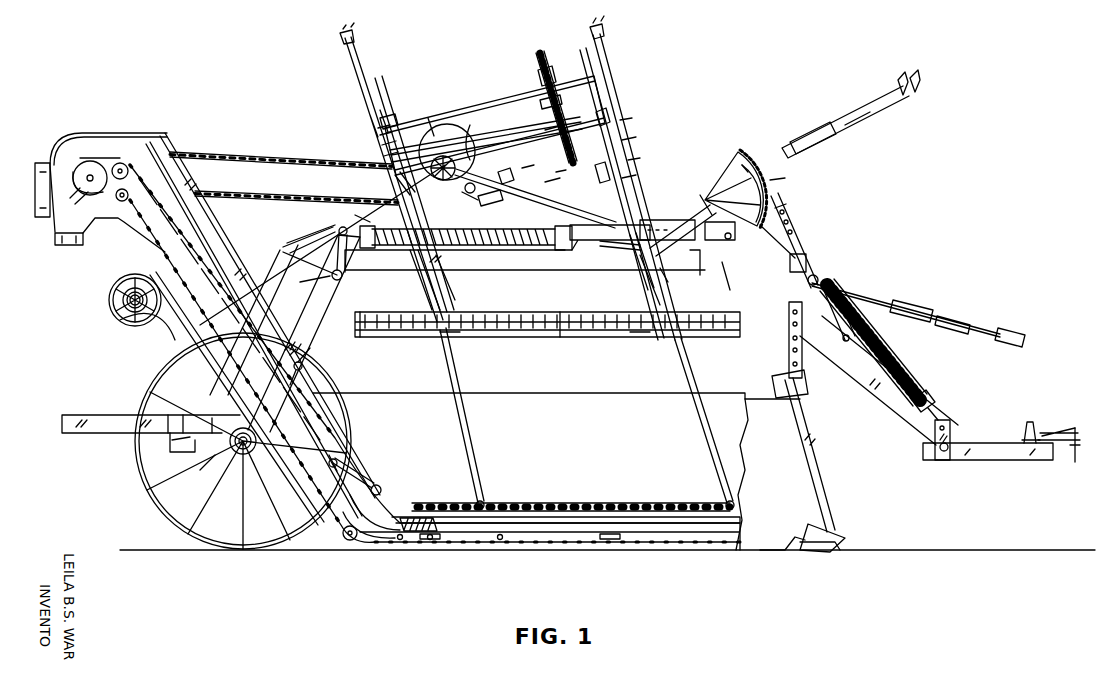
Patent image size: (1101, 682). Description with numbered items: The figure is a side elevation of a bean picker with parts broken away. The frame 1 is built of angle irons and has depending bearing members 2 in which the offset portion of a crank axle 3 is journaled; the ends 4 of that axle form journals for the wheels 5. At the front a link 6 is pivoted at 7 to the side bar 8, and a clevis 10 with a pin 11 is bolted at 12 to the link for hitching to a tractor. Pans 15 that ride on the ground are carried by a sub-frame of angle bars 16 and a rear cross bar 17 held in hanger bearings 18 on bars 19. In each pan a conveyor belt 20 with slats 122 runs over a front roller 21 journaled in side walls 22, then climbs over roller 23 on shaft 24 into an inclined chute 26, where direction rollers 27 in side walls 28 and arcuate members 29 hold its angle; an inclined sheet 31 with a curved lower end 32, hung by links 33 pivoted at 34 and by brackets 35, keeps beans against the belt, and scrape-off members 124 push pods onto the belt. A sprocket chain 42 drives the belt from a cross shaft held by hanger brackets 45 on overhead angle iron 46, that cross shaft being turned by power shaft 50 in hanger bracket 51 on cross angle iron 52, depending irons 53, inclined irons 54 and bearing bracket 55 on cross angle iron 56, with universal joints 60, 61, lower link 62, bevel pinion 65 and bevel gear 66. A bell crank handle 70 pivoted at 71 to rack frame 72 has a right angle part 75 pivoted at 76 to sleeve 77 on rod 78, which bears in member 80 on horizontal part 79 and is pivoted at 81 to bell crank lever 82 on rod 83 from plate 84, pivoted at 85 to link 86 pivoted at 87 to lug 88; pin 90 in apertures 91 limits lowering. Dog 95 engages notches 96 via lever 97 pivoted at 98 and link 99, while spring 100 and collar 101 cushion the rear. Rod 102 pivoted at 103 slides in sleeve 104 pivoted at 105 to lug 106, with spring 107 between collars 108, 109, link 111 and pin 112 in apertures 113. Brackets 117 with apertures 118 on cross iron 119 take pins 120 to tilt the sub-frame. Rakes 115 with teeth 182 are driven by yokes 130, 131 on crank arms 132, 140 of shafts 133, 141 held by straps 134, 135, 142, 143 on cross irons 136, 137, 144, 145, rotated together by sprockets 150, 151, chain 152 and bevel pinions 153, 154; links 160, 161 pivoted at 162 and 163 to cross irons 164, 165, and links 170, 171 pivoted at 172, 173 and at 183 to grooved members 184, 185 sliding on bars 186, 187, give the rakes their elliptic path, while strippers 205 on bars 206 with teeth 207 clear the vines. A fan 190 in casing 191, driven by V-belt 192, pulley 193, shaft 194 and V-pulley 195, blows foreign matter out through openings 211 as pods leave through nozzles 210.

The frame 1 is at (66, 416).
The bearing members 2 is at (173, 418).
The crank axle 3 is at (178, 455).
The ends of crank axle 4 is at (240, 456).
The wheels 5 is at (137, 470).
The link 6 is at (988, 460).
The pivot 7 is at (936, 451).
The side bar 8 is at (896, 428).
The clevis 10 is at (1074, 428).
The pin 11 is at (1073, 450).
The bolts 12 is at (1030, 421).
The pans 15 is at (440, 546).
The angle bars 16 is at (810, 468).
The rear cross bar 17 is at (303, 364).
The hanger bearings 18 is at (294, 372).
The bars 19 is at (300, 331).
The conveyor belt 20 is at (62, 152).
The roller 21 is at (836, 551).
The side walls 22 is at (846, 530).
The roller 23 is at (84, 192).
The shaft 24 is at (89, 176).
The chute 26 is at (167, 134).
The direction rollers 27 is at (120, 163).
The side walls 28 is at (175, 162).
The arcuate members 29 is at (385, 520).
The inclined flat sheet 31 is at (216, 258).
The curved lower end 32 is at (378, 505).
The links 33 is at (350, 470).
The pivots 34 is at (379, 485).
The brackets 35 is at (334, 458).
The sprocket chain 42 is at (278, 154).
The hanger brackets 45 is at (430, 118).
The overhead cross angle iron 46 is at (432, 156).
The power shaft 50 is at (600, 216).
The hanger bracket 51 is at (495, 201).
The cross angle iron 52 is at (510, 176).
The depending angle irons 53 is at (512, 130).
The angle irons 54 is at (475, 148).
The bearing bracket 55 is at (694, 256).
The cross angle iron 56 is at (725, 276).
The universal joint 60 is at (790, 262).
The universal joint 61 is at (990, 330).
The lower link 62 is at (1000, 343).
The bevel pinion 65 is at (472, 194).
The bevel gear 66 is at (476, 209).
The bell crank lever handle 70 is at (848, 118).
The pivot 71 is at (715, 195).
The rack frame 72 is at (740, 154).
The lower right angle part 75 is at (712, 208).
The pivot 76 is at (764, 230).
The sleeve 77 is at (718, 226).
The rod 78 is at (575, 250).
The horizontal part 79 is at (530, 257).
The upstanding member 80 is at (575, 218).
The pivot 81 is at (339, 227).
The bell crank lever 82 is at (310, 255).
The rod 83 is at (342, 279).
The plate 84 is at (333, 280).
The pivot 85 is at (279, 250).
The link 86 is at (265, 312).
The pivot 87 is at (216, 425).
The upstanding lug 88 is at (222, 468).
The adjustable pin 90 is at (668, 220).
The apertures 91 is at (625, 245).
The sliding dog 95 is at (790, 150).
The notches 96 is at (783, 180).
The handle lever 97 is at (917, 88).
The pivot 98 is at (896, 90).
The link 99 is at (875, 126).
The coiled spring 100 is at (508, 228).
The adjustable collar 101 is at (356, 218).
The rod 102 is at (786, 210).
The pivot 103 is at (740, 170).
The sleeve 104 is at (812, 256).
The pivot 105 is at (952, 424).
The upstanding lug 106 is at (953, 436).
The coiled spring 107 is at (901, 368).
The adjustable collar 108 is at (935, 400).
The collar 109 is at (820, 276).
The link 111 is at (802, 320).
The adjustable pin 112 is at (793, 234).
The apertures 113 is at (790, 222).
The rakes 115 is at (530, 506).
The upstanding brackets 117 is at (791, 364).
The apertures 118 is at (791, 346).
The cross angle iron 119 is at (802, 378).
The adjustable pins 120 is at (791, 326).
The slats 122 is at (548, 541).
The scrape-off members 124 is at (424, 517).
The forward yoke 130 is at (607, 68).
The rear yoke 131 is at (356, 50).
The crank arm 132 is at (593, 80).
The shaft 133 is at (556, 165).
The hanger strap 134 is at (602, 170).
The hanger strap 135 is at (400, 192).
The cross angle iron 136 is at (604, 114).
The cross angle iron 137 is at (385, 174).
The crank arm 140 is at (385, 93).
The shaft 141 is at (468, 96).
The bearing strap 142 is at (545, 75).
The bearing strap 143 is at (396, 114).
The cross angle iron 144 is at (550, 116).
The cross angle iron 145 is at (382, 146).
The sprocket wheel 150 is at (552, 54).
The sprocket wheel 151 is at (552, 180).
The sprocket chain 152 is at (552, 126).
The bevel pinion 153 is at (439, 182).
The beveled pinions 154 is at (535, 165).
The link 160 is at (630, 270).
The link 161 is at (417, 266).
The pivot 162 is at (378, 127).
The pivot 163 is at (424, 285).
The cross angle iron 164 is at (666, 278).
The cross angle iron 165 is at (448, 265).
The link 170 is at (666, 306).
The link 171 is at (428, 302).
The pivot 172 is at (602, 40).
The pivot 173 is at (340, 40).
The teeth 182 is at (484, 326).
The pivot 183 is at (383, 158).
The grooved member 184 is at (628, 141).
The grooved member 185 is at (381, 135).
The depending bars 186 is at (628, 178).
The depending bars 187 is at (390, 212).
The fan 190 is at (115, 314).
The casing 191 is at (108, 299).
The V-belt 192 is at (296, 204).
The pulley 193 is at (122, 288).
The shaft 194 is at (135, 328).
The V-pulley 195 is at (476, 118).
The strippers 205 is at (528, 310).
The bars 206 is at (447, 300).
The depending teeth 207 is at (550, 310).
The nozzles 210 is at (58, 250).
The openings 211 is at (34, 176).